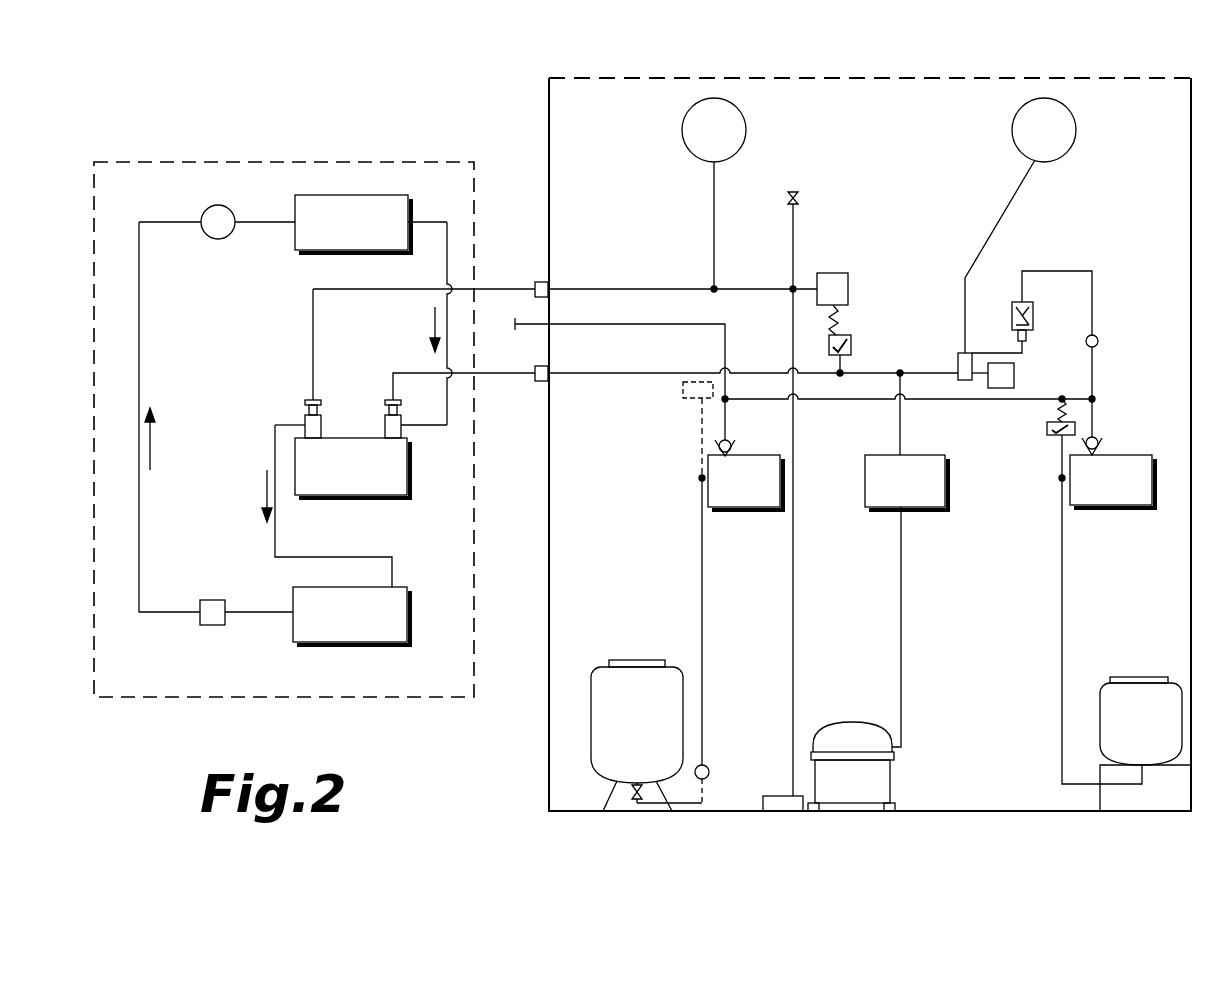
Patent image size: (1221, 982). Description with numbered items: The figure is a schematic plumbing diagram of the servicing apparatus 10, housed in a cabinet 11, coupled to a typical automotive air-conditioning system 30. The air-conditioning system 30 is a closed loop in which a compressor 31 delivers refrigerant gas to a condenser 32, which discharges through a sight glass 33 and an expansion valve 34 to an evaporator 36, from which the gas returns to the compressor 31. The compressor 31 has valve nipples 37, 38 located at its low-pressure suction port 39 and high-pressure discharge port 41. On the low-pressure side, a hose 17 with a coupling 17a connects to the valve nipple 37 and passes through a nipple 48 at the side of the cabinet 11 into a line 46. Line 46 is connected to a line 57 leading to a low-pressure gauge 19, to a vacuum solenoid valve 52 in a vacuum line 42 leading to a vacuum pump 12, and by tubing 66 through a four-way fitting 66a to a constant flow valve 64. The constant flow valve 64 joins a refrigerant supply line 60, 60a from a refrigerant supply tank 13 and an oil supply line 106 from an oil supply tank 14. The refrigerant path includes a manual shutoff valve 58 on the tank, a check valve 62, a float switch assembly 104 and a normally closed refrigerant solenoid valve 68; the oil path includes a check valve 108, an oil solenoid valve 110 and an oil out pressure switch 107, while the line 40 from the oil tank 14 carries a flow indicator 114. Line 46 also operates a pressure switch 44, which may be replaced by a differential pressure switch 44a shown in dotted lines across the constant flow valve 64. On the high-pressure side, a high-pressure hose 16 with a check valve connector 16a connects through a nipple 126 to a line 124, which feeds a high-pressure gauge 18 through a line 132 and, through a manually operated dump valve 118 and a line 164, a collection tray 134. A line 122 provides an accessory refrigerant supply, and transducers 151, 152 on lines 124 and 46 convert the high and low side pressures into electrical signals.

The servicing apparatus 10 is at (1084, 70).
The cabinet 11 is at (549, 165).
The vacuum pump 12 is at (875, 730).
The refrigerant supply tank 13 is at (683, 670).
The oil supply tank 14 is at (1100, 690).
The high-pressure hose 16 is at (502, 288).
The check valve connector 16a is at (318, 400).
The hose 17 is at (503, 375).
The coupling 17a is at (401, 402).
The high-pressure gauge 18 is at (735, 152).
The low-pressure gauge 19 is at (1068, 153).
The automotive air-conditioning system 30 is at (168, 133).
The compressor 31 is at (410, 498).
The condenser 32 is at (407, 590).
The sight glass 33 is at (222, 625).
The expansion valve 34 is at (228, 207).
The evaporator 36 is at (408, 197).
The valve nipple 37 is at (385, 404).
The valve nipple 38 is at (305, 405).
The low-pressure suction port 39 is at (403, 433).
The line 40 is at (1092, 308).
The high-pressure discharge port 41 is at (321, 428).
The vacuum line 42 is at (901, 582).
The pressure switch 44 is at (851, 345).
The differential pressure switch 44a is at (683, 400).
The line 46 is at (650, 374).
The nipple 48 is at (540, 366).
The vacuum solenoid valve 52 is at (925, 508).
The line 57 is at (1000, 224).
The manual shutoff valve 58 is at (634, 802).
The refrigerant supply line 60 is at (702, 582).
The refrigerant supply line 60a is at (876, 401).
The check valve 62 is at (732, 444).
The constant flow valve 64 is at (1033, 320).
The tubing 66 is at (984, 353).
The four-way fitting 66a is at (958, 356).
The refrigerant solenoid valve 68 is at (772, 507).
The float switch assembly 104 is at (709, 770).
The oil supply line 106 is at (1062, 572).
The oil out pressure switch 107 is at (1047, 432).
The check valve 108 is at (1099, 440).
The oil solenoid valve 110 is at (1153, 466).
The flow indicator 114 is at (1098, 341).
The dump valve 118 is at (798, 198).
The line 122 is at (650, 326).
The line 124 is at (663, 290).
The nipple 126 is at (540, 282).
The line 132 is at (714, 258).
The collection tray 134 is at (778, 812).
The transducer 151 is at (848, 280).
The transducer 152 is at (1014, 382).
The line 164 is at (793, 572).